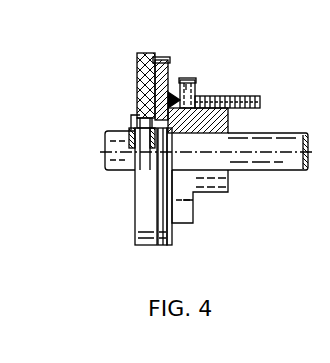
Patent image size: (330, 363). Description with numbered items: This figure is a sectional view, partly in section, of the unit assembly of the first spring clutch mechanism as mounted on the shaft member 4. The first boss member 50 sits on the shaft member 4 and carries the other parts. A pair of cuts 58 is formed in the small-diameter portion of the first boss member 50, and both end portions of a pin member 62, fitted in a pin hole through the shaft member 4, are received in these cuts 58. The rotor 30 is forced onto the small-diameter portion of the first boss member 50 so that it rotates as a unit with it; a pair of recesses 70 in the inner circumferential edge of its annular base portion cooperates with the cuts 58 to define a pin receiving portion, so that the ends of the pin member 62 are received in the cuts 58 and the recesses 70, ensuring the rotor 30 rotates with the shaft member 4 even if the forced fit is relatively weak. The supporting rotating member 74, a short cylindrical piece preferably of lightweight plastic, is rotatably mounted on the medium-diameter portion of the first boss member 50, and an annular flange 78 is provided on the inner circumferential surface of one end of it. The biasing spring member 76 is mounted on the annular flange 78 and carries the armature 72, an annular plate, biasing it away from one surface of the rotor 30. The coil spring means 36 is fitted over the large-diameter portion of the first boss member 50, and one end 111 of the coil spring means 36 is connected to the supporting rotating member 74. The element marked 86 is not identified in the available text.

The shaft member 4 is at (283, 160).
The rotor 30 is at (135, 200).
The coil spring means 36 is at (238, 97).
The first boss member 50 is at (222, 194).
The cuts 58 is at (130, 131).
The pin member 62 is at (130, 125).
The recesses 70 is at (130, 114).
The armature 72 is at (160, 215).
The supporting rotating member 74 is at (174, 100).
The biasing spring member 76 is at (172, 232).
The annular flange 78 is at (134, 86).
The plate 86 is at (137, 73).
The one end of the coil spring means 111 is at (190, 84).